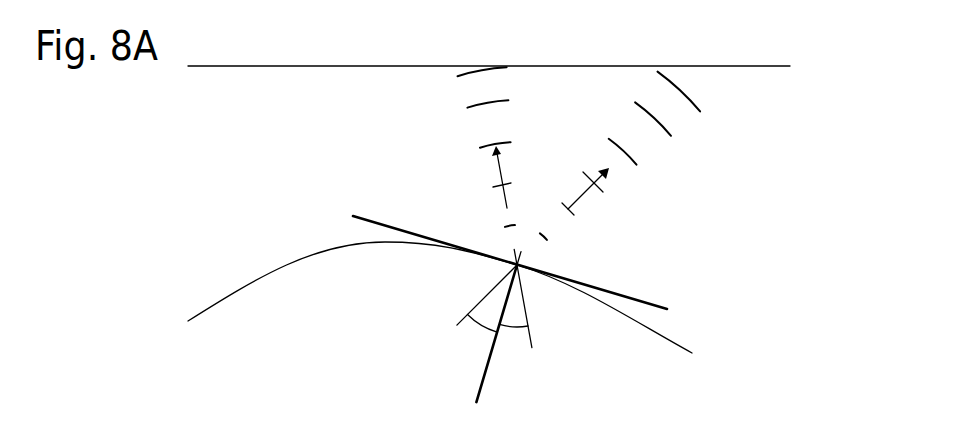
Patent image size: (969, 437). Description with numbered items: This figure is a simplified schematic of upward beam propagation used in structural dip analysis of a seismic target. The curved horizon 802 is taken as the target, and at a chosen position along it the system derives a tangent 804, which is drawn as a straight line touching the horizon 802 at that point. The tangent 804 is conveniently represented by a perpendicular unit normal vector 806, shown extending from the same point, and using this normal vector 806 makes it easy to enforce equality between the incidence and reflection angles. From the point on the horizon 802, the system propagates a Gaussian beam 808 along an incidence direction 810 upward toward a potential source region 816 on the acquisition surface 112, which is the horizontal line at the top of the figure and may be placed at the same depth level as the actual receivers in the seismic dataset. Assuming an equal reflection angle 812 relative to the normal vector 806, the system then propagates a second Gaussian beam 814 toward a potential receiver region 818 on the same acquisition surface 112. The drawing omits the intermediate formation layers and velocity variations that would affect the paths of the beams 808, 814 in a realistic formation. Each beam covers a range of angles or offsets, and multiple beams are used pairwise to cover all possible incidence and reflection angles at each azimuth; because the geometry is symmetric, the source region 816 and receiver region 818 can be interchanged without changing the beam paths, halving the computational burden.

The acquisition surface 112 is at (330, 66).
The horizon 802 is at (242, 287).
The tangent 804 is at (406, 229).
The normal vector 806 is at (474, 391).
The Gaussian beam 808 is at (483, 177).
The incidence direction 810 is at (512, 329).
The reflection angle 812 is at (483, 331).
The Gaussian beam 814 is at (592, 195).
The source region 816 is at (504, 58).
The receiver region 818 is at (742, 62).